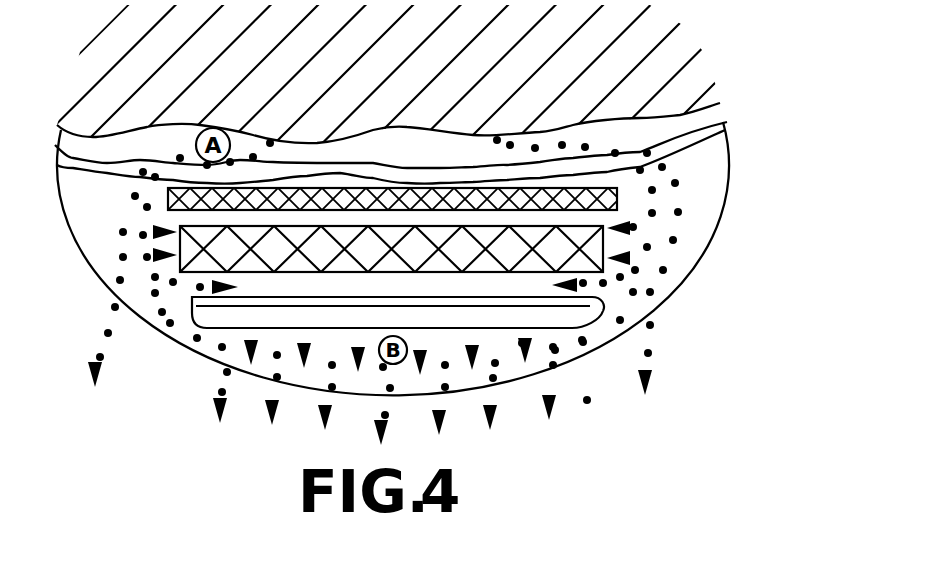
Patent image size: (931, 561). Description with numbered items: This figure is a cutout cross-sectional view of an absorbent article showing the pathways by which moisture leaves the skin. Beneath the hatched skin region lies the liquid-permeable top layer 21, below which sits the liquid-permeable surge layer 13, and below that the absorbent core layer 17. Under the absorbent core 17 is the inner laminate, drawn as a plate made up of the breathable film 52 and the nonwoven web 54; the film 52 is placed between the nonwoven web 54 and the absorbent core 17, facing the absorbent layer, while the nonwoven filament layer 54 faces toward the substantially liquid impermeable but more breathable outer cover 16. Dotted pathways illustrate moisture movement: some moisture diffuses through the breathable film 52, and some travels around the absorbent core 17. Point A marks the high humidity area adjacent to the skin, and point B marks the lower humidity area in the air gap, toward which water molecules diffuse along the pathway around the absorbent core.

The liquid-permeable top layer 21 is at (727, 125).
The liquid-permeable surge layer 13 is at (617, 198).
The outer cover 16 is at (493, 227).
The absorbent core layer 17 is at (603, 248).
The breathable film 52 is at (598, 297).
The nonwoven filament layer 54 is at (585, 329).